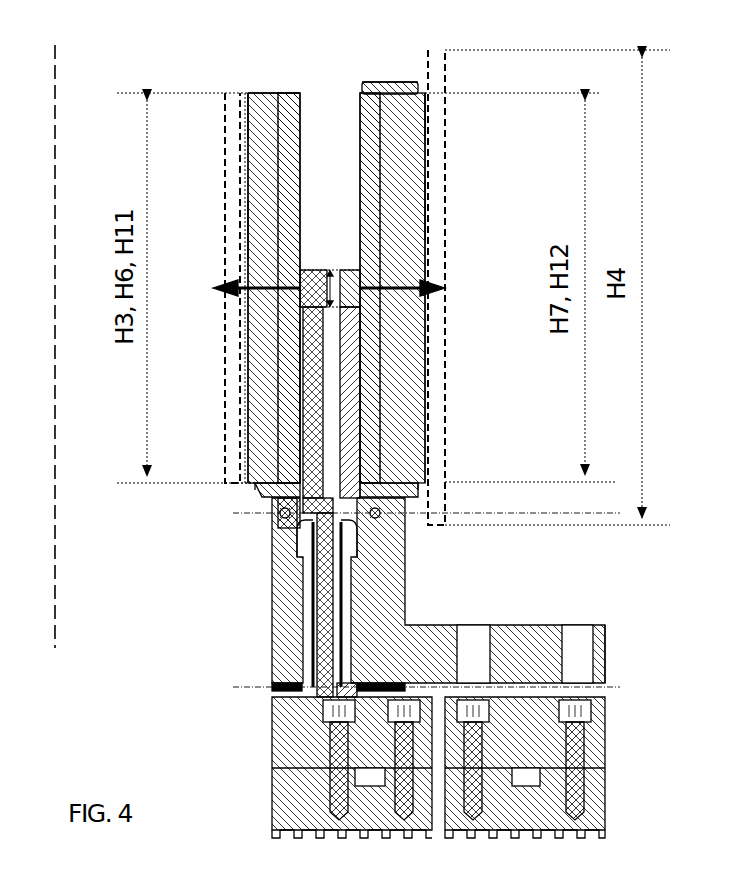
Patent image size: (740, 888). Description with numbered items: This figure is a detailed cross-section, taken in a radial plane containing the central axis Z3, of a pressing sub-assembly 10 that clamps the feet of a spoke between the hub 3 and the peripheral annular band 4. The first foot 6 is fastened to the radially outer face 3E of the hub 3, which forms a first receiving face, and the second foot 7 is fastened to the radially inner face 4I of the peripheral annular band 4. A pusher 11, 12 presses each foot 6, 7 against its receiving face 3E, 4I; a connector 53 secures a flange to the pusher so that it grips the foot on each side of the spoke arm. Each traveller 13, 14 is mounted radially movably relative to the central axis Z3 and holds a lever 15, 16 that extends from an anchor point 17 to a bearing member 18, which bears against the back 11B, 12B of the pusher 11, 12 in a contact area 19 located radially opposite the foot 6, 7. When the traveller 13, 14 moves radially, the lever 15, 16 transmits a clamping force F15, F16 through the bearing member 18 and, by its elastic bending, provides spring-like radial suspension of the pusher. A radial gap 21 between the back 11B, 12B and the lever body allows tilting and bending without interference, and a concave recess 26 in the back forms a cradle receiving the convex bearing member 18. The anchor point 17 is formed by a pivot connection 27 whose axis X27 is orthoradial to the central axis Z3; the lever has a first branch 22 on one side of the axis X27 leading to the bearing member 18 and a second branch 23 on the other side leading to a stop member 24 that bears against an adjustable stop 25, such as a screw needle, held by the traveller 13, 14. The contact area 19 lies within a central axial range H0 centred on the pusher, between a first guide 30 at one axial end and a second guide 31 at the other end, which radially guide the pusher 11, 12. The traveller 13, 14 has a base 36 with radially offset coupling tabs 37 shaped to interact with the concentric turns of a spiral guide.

The hub 3 is at (235, 108).
The peripheral annular band 4 is at (438, 62).
The first foot 6 is at (247, 153).
The second foot 7 is at (400, 165).
The pressing sub-assembly 10 is at (116, 712).
The pusher 11 is at (247, 172).
The back of the pusher 11B is at (247, 200).
The pusher 12 is at (370, 215).
The back of the pusher 12B is at (432, 205).
The traveller 13 is at (428, 785).
The traveller 14 is at (605, 652).
The lever 15 is at (297, 447).
The lever 16 is at (362, 450).
The anchor point 17 is at (377, 590).
The bearing member 18 is at (305, 322).
The contact area 19 is at (290, 302).
The radial gap 21 is at (230, 481).
The first branch 22 is at (290, 408).
The second branch 23 is at (272, 597).
The stop member 24 is at (310, 601).
The adjustable stop 25 is at (272, 690).
The recess 26 is at (284, 274).
The pivot connection 27 is at (377, 590).
The first guide 30 is at (245, 490).
The second guide 31 is at (264, 88).
The base 36 is at (272, 800).
The coupling tabs 37 is at (547, 840).
The connector 53 is at (412, 82).
The radially outer face 3E is at (250, 132).
The radially inner face 4I is at (426, 125).
The clamping force F15 is at (284, 297).
The clamping force F16 is at (440, 282).
The axis of the pivot connection X27 is at (280, 516).
The central axial range H0 is at (333, 268).
The central axis Z3 is at (58, 640).